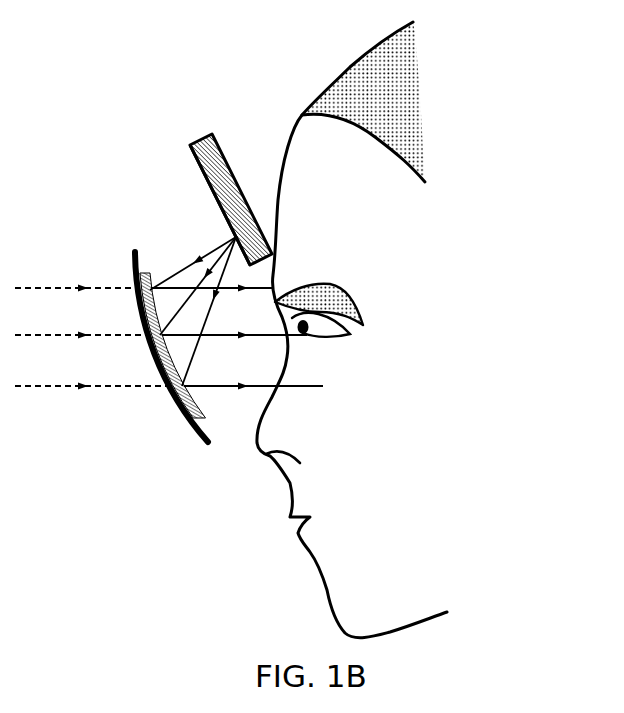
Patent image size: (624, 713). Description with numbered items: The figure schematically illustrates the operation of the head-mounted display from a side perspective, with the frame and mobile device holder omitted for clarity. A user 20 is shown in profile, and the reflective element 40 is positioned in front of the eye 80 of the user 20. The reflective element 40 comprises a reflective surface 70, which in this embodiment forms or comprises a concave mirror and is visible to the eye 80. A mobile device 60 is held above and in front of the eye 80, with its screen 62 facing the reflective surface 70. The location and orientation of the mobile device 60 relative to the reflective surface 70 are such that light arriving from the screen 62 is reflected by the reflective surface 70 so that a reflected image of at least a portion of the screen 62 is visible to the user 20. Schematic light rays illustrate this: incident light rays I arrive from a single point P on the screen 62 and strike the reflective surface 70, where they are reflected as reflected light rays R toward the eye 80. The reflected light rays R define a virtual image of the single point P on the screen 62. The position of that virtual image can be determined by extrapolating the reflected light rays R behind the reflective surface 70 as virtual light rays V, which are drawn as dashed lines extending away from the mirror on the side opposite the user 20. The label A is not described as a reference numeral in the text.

The user 20 is at (357, 52).
The reflective element 40 is at (195, 437).
The mobile device 60 is at (207, 138).
The screen 62 is at (208, 190).
The reflective surface 70 is at (197, 406).
The eye 80 is at (330, 335).
The single point P is at (221, 226).
The incident light rays I is at (158, 277).
The reflected light rays R is at (293, 387).
The virtual light rays V is at (38, 387).
The user A is at (225, 330).